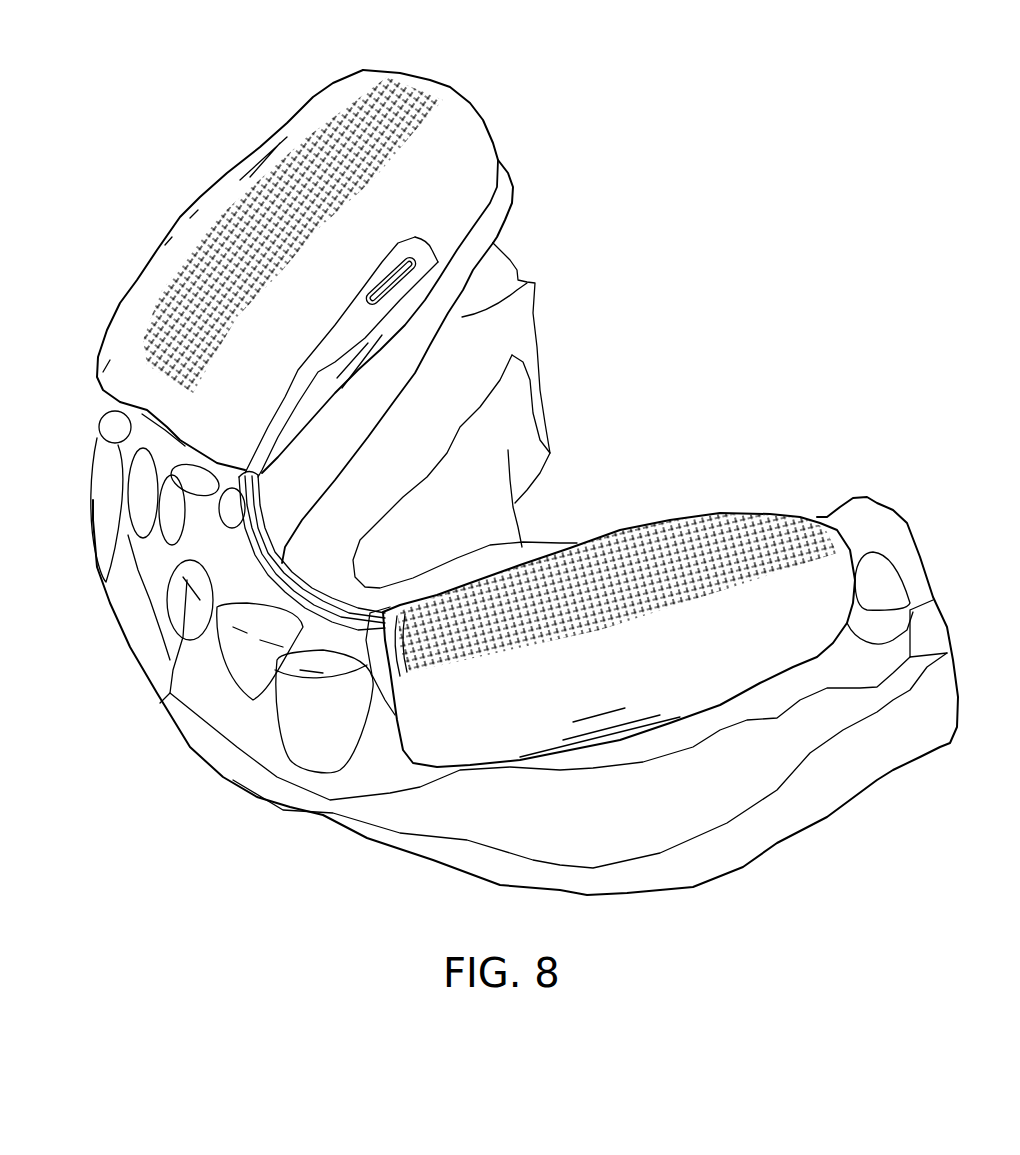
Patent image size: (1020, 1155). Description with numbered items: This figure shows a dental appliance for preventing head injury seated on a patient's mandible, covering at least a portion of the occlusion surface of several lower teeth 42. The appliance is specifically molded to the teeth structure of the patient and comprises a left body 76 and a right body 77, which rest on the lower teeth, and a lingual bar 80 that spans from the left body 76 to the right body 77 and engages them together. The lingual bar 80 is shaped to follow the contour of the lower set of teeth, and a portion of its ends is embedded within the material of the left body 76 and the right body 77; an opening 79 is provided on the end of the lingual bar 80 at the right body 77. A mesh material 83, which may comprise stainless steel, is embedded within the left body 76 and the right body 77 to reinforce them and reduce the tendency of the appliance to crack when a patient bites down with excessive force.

The lower set of teeth 42 is at (102, 458).
The left body 76 is at (640, 537).
The right body 77 is at (470, 123).
The opening 79 is at (387, 302).
The lingual bar 80 is at (303, 593).
The mesh material 83 is at (403, 102).